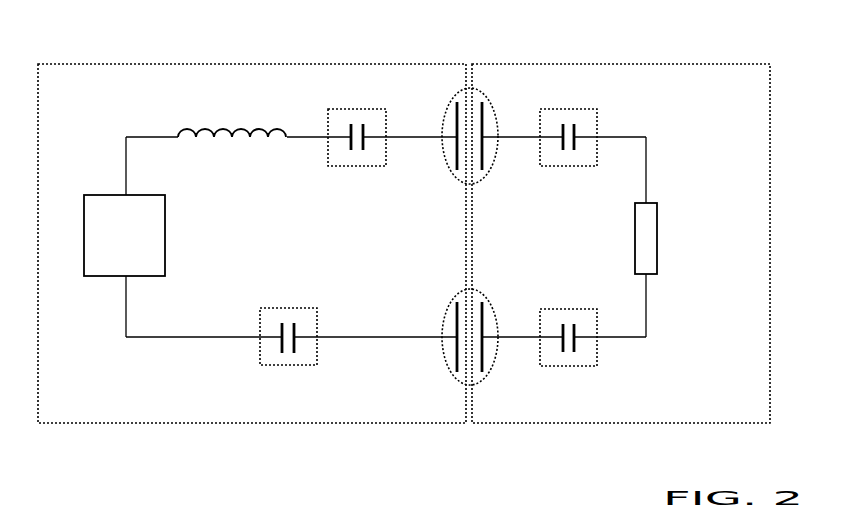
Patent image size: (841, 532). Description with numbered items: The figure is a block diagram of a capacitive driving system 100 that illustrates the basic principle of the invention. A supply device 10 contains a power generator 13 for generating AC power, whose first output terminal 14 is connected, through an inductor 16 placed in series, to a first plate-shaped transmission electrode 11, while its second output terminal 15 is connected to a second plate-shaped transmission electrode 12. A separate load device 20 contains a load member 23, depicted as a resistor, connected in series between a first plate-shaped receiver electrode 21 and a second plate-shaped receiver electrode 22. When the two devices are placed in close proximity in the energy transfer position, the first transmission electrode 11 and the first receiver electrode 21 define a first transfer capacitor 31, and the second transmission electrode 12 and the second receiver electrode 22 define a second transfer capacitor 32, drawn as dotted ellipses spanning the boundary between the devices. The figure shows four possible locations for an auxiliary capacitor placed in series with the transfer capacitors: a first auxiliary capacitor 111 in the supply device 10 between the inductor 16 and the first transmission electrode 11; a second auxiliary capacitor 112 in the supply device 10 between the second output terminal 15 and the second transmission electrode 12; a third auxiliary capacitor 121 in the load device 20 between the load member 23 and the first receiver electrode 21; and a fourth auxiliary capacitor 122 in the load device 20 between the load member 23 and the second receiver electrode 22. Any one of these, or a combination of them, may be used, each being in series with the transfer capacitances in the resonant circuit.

The capacitive driving system 100 is at (757, 51).
The supply device 10 is at (358, 62).
The load device 20 is at (548, 62).
The power generator 13 is at (124, 235).
The first output terminal 14 is at (124, 176).
The second output terminal 15 is at (124, 297).
The inductor 16 is at (248, 128).
The first transmission electrode 11 is at (450, 118).
The second transmission electrode 12 is at (455, 353).
The first receiver electrode 21 is at (484, 121).
The second receiver electrode 22 is at (484, 353).
The first transfer capacitor 31 is at (452, 172).
The second transfer capacitor 32 is at (455, 298).
The load member 23 is at (660, 229).
The first auxiliary capacitor 111 is at (335, 167).
The second auxiliary capacitor 112 is at (313, 308).
The third auxiliary capacitor 121 is at (557, 167).
The fourth auxiliary capacitor 122 is at (563, 307).